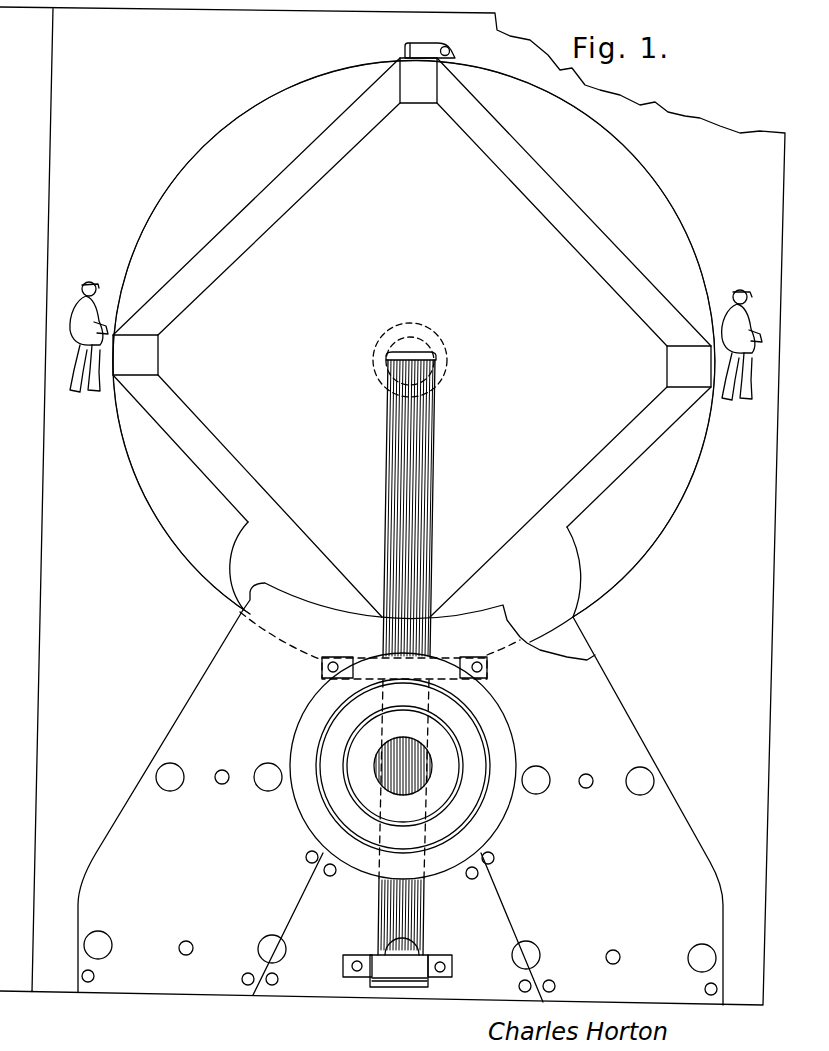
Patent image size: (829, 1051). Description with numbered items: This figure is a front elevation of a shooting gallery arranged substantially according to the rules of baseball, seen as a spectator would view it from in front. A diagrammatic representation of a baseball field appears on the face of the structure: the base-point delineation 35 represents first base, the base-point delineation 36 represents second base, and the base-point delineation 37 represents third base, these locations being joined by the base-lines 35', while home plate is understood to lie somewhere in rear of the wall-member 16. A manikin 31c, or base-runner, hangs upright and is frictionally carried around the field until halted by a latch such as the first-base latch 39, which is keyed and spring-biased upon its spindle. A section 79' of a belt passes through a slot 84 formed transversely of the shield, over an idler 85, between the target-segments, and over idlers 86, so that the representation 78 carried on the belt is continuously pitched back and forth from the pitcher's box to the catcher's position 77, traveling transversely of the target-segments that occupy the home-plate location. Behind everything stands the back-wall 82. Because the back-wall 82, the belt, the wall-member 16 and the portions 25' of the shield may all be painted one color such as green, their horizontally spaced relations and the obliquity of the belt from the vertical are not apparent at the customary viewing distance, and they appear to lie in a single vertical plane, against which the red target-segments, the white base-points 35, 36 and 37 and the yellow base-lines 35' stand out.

The back-wall 82 is at (394, 351).
The portions of shield 25' is at (414, 339).
The base-lines 35' is at (412, 337).
The base-point delineation 36 is at (418, 80).
The base-point delineation 37 is at (135, 355).
The base-point delineation 35 is at (689, 366).
The first-base latch 39 is at (425, 50).
The manikin 31c is at (88, 283).
The slot 84 is at (412, 358).
The section of belt 79' is at (431, 653).
The catcher's position 77 is at (398, 927).
The representation 78 is at (423, 948).
The idler 85 is at (433, 677).
The wall-member 16 is at (612, 727).
The idlers 86 is at (395, 965).